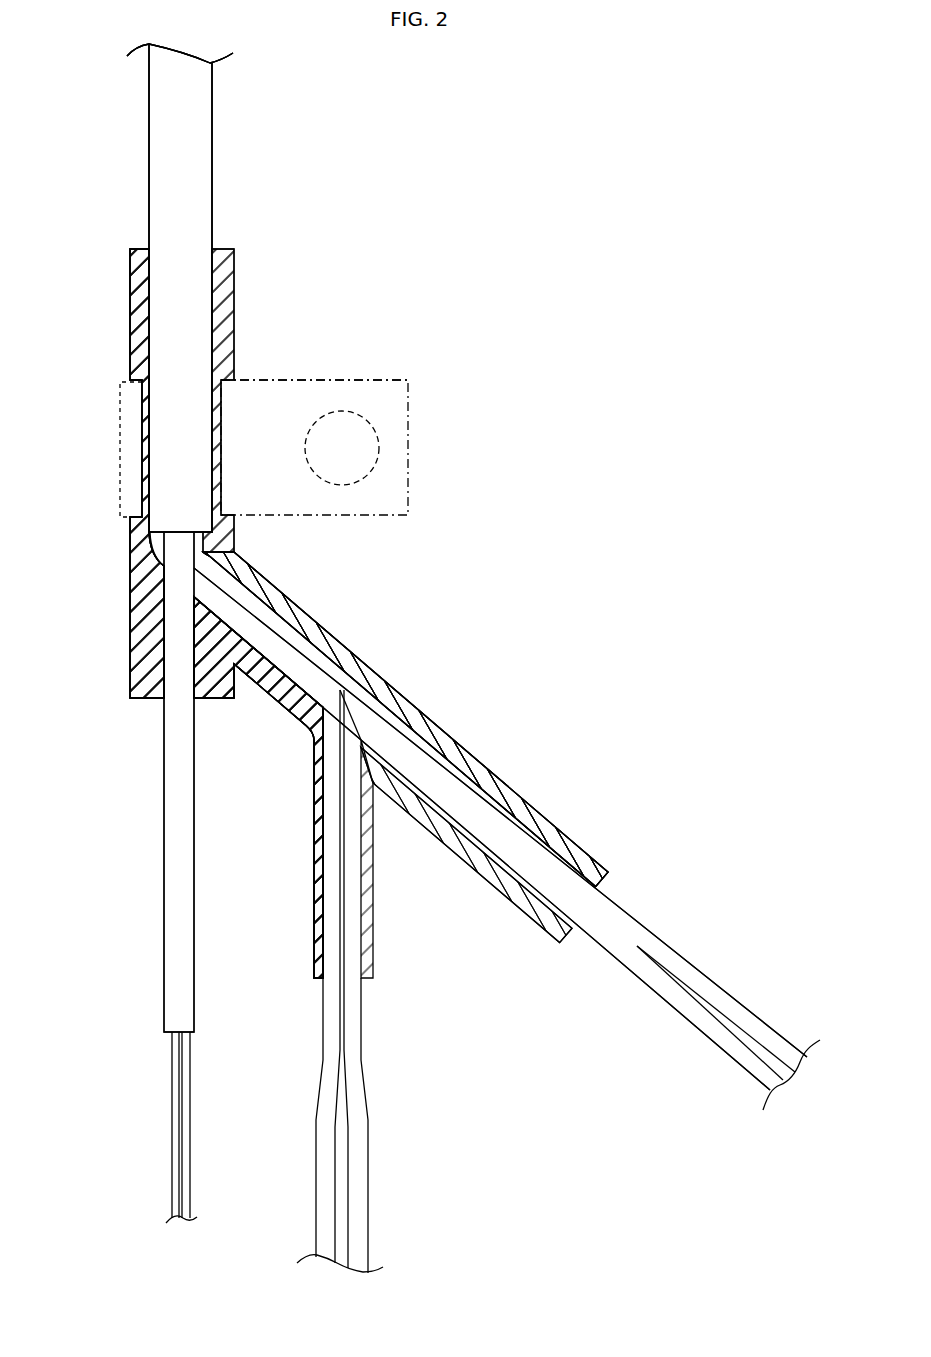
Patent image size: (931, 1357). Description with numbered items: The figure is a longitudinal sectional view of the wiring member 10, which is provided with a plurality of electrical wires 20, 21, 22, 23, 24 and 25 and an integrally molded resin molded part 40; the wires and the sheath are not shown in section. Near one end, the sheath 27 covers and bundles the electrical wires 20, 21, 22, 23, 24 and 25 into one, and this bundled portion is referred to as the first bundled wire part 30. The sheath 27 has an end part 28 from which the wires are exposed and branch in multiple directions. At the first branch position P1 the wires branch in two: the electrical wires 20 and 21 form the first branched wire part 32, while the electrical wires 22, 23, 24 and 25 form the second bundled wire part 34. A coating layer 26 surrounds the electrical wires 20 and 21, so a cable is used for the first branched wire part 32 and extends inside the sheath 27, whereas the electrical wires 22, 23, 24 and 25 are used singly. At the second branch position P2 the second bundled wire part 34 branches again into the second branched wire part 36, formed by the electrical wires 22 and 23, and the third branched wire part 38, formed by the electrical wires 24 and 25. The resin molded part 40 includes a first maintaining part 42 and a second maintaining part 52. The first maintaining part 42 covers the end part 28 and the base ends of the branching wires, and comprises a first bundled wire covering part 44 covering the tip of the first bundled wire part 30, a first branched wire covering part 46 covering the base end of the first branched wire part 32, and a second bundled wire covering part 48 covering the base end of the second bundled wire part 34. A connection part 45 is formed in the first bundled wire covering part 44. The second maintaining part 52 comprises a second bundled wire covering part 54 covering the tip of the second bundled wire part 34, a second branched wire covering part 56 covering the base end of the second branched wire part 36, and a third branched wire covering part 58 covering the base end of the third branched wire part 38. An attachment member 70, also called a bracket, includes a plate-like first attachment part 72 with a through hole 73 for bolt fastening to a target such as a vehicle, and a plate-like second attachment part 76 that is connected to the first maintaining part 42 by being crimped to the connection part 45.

The wiring member 10 is at (437, 214).
The electrical wire 20 is at (172, 1145).
The electrical wire 21 is at (185, 1140).
The electrical wire 22 is at (320, 1208).
The electrical wire 23 is at (360, 1203).
The electrical wire 24 is at (748, 1064).
The electrical wire 25 is at (777, 1045).
The coating layer 26 is at (178, 962).
The sheath 27 is at (204, 146).
The end part 28 is at (180, 500).
The first bundled wire part 30 is at (148, 112).
The first branched wire part 32 is at (162, 825).
The second bundled wire part 34 is at (300, 628).
The second branched wire part 36 is at (320, 850).
The third branched wire part 38 is at (440, 744).
The resin molded part 40 is at (388, 677).
The first maintaining part 42 is at (129, 548).
The first bundled wire covering part 44 is at (235, 535).
The connection part 45 is at (142, 416).
The first branched wire covering part 46 is at (150, 650).
The second bundled wire covering part 48 is at (257, 673).
The second maintaining part 52 is at (308, 736).
The second bundled wire covering part 54 is at (335, 660).
The second branched wire covering part 56 is at (313, 810).
The third branched wire covering part 58 is at (487, 777).
The attachment member 70 is at (378, 378).
The first attachment part 72 is at (292, 378).
The through hole 73 is at (328, 467).
The second attachment part 76 is at (122, 447).
The first branch position P1 is at (150, 565).
The second branch position P2 is at (369, 763).